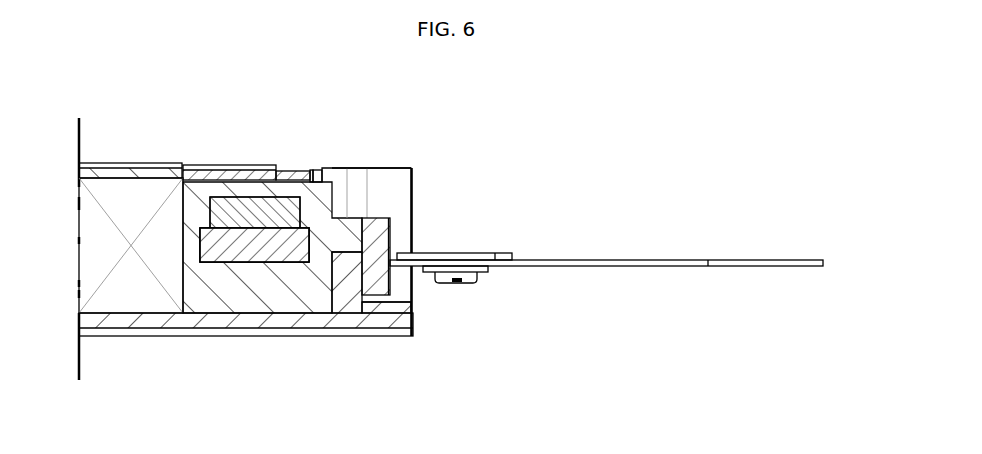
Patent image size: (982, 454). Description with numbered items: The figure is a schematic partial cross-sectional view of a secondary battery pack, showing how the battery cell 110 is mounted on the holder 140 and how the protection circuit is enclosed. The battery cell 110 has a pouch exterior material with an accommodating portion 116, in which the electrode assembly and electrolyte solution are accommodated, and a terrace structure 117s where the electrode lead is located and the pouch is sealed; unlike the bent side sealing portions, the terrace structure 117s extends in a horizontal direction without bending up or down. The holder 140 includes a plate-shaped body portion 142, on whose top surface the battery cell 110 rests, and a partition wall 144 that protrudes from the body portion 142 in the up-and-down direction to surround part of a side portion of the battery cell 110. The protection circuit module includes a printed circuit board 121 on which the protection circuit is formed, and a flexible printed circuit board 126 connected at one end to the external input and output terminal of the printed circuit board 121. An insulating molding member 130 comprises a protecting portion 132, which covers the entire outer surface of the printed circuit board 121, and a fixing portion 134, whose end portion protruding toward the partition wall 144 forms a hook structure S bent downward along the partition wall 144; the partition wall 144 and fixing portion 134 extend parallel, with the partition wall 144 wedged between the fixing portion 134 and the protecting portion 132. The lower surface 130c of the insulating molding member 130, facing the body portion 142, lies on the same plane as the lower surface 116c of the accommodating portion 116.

The battery cell 110 is at (146, 154).
The accommodating portion 116 is at (112, 302).
The lower surface of the accommodating portion 116c is at (146, 314).
The terrace structure 117s is at (222, 166).
The printed circuit board 121 is at (253, 254).
The body portion 142 is at (210, 325).
The printed circuit board 126 is at (668, 260).
The insulating molding member 130 is at (402, 121).
The protecting portion 132 is at (320, 168).
The fixing portion 134 is at (381, 226).
The lower surface of the insulating molding member 130c is at (309, 315).
The holder 140 is at (364, 346).
The partition wall 144 is at (358, 247).
The hook structure S is at (388, 280).